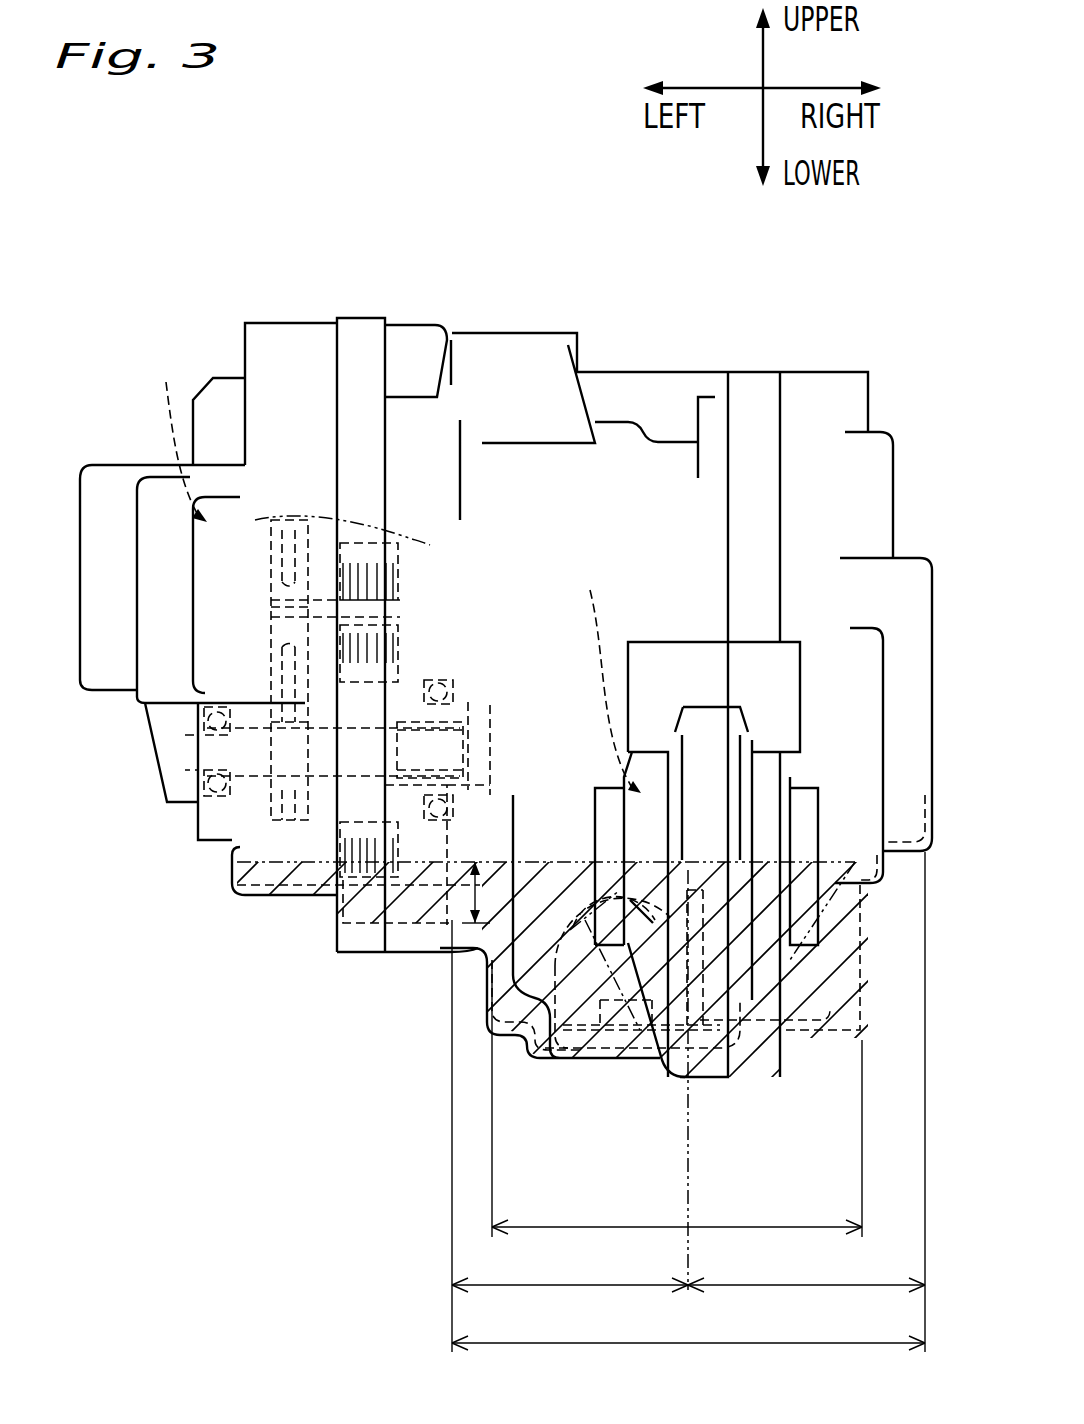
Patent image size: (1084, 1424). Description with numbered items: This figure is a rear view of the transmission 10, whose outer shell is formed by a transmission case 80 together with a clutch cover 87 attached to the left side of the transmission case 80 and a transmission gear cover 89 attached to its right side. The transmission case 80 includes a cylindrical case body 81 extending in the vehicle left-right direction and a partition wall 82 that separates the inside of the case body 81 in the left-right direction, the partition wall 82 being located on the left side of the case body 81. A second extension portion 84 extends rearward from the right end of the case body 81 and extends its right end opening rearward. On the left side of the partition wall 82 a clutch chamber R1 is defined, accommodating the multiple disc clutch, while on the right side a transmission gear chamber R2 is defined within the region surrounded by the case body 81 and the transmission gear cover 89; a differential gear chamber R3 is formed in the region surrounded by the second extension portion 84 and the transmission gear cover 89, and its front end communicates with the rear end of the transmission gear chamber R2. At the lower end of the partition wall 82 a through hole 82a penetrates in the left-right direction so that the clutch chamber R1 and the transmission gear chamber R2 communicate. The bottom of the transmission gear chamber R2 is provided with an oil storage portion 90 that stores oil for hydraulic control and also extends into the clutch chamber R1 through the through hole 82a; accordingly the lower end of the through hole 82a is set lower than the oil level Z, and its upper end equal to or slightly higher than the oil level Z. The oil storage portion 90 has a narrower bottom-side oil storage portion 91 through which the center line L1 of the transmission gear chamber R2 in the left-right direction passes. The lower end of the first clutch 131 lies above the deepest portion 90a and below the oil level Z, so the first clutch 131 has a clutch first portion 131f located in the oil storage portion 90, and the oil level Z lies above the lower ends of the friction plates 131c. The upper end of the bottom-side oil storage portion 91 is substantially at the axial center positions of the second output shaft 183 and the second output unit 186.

The transmission 10 is at (418, 232).
The clutch cover 87 is at (285, 323).
The transmission case 80 is at (515, 333).
The transmission gear cover 89 is at (822, 372).
The case body 81 is at (423, 955).
The partition wall 82 is at (455, 660).
The through hole 82a is at (480, 862).
The second extension portion 84 is at (645, 1062).
The oil storage portion 90 is at (560, 900).
The deepest portion 90a is at (562, 1060).
The bottom-side oil storage portion 91 is at (677, 1100).
The first clutch 131 is at (410, 605).
The friction plates 131c is at (335, 930).
The clutch first portion 131f is at (318, 912).
The second output shaft 183 is at (810, 1040).
The second output unit 186 is at (598, 875).
The clutch chamber R1 is at (285, 444).
The transmission gear chamber R2 is at (688, 1102).
The differential gear chamber R3 is at (600, 673).
The center line L1 is at (690, 1105).
The oil level Z is at (835, 862).